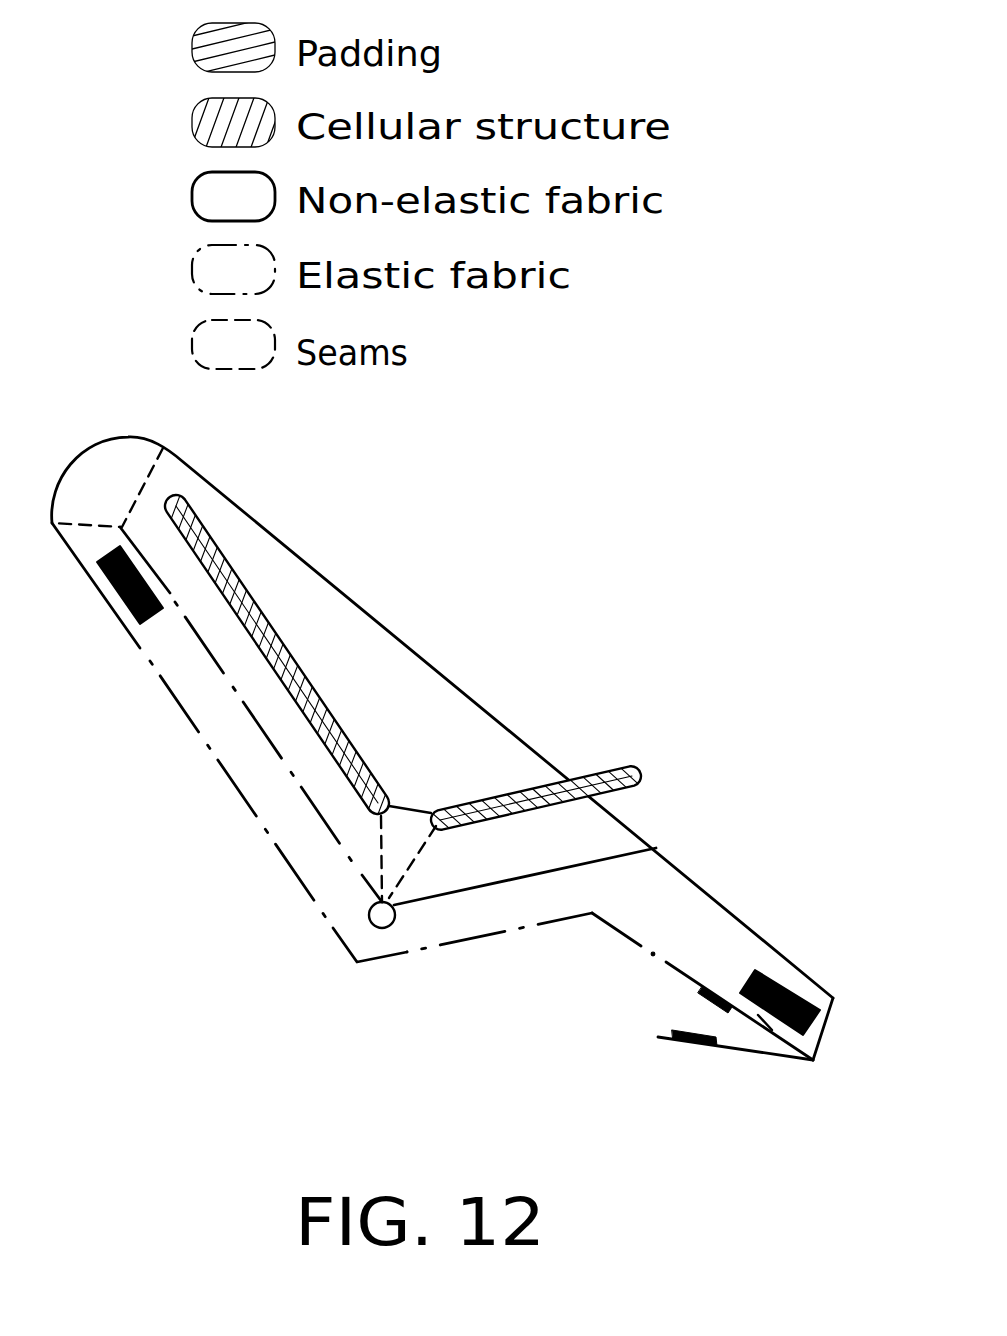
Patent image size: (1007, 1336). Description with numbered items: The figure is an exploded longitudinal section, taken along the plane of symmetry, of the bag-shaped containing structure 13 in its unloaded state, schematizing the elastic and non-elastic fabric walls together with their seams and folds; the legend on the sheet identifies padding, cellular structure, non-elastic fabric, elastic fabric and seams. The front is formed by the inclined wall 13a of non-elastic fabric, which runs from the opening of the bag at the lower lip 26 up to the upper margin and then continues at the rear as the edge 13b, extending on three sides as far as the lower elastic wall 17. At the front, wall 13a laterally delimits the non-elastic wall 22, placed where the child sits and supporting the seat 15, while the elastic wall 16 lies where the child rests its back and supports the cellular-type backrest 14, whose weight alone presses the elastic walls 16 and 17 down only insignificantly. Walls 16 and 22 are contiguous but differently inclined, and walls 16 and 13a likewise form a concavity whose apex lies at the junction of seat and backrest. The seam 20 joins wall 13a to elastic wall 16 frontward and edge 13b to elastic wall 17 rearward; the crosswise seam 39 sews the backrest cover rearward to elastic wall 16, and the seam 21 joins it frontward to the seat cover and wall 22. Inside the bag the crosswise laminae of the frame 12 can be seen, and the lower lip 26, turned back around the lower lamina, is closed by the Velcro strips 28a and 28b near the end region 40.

The frame 12 is at (105, 555).
The containing structure 13 is at (530, 624).
The wall of non-elastic fabric 13a is at (380, 627).
The edge 13b is at (63, 537).
The backrest 14 is at (302, 692).
The seat 15 is at (545, 796).
The elastic wall 16 is at (200, 642).
The lower elastic wall 17 is at (217, 760).
The seam 20 is at (143, 492).
The seam 21 is at (407, 812).
The wall of non-elastic fabric 22 is at (572, 860).
The lower lip 26 is at (783, 1060).
The strip of Velcro 28a is at (705, 995).
The strip of Velcro 28b is at (680, 1043).
The crosswise seam 39 is at (377, 855).
The strap end 40 is at (810, 1047).